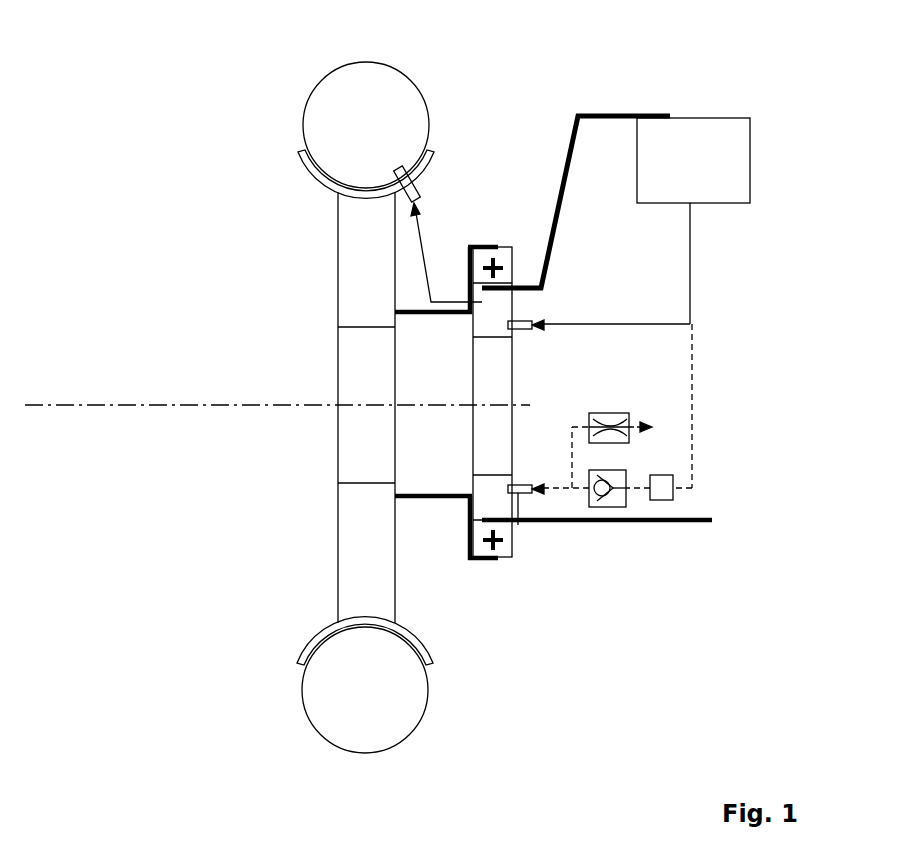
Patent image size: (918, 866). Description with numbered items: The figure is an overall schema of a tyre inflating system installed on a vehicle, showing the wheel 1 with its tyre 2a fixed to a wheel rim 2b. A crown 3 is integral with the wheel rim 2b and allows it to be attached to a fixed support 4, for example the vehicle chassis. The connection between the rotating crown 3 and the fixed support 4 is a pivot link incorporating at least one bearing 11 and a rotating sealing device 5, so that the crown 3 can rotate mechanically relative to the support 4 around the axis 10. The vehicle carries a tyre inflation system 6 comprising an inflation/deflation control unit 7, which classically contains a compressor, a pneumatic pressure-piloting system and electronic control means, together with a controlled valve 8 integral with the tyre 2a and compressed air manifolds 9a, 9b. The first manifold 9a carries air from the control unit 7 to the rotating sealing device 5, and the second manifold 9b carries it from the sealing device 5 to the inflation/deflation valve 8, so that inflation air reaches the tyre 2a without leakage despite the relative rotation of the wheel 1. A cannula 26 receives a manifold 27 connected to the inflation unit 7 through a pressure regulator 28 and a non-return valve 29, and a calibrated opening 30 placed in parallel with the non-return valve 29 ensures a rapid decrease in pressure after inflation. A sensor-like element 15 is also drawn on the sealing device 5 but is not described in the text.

The wheel 1 is at (226, 661).
The tyre 2a is at (362, 730).
The wheel rim 2b is at (348, 225).
The crown 3 is at (435, 498).
The fixed support 4 is at (575, 118).
The rotating sealing device 5 is at (477, 487).
The tyre inflation system 6 is at (747, 244).
The inflation/deflation control unit 7 is at (693, 160).
The controlled valve 8 is at (417, 188).
The first manifold 9a is at (613, 323).
The second manifold 9b is at (425, 250).
The axis 10 is at (145, 405).
The bearing 11 is at (490, 552).
The sensor 15 is at (525, 330).
The cannula 26 is at (515, 525).
The manifold 27 is at (692, 380).
The pressure regulator 28 is at (665, 493).
The non-return valve 29 is at (613, 507).
The calibrated opening 30 is at (615, 412).